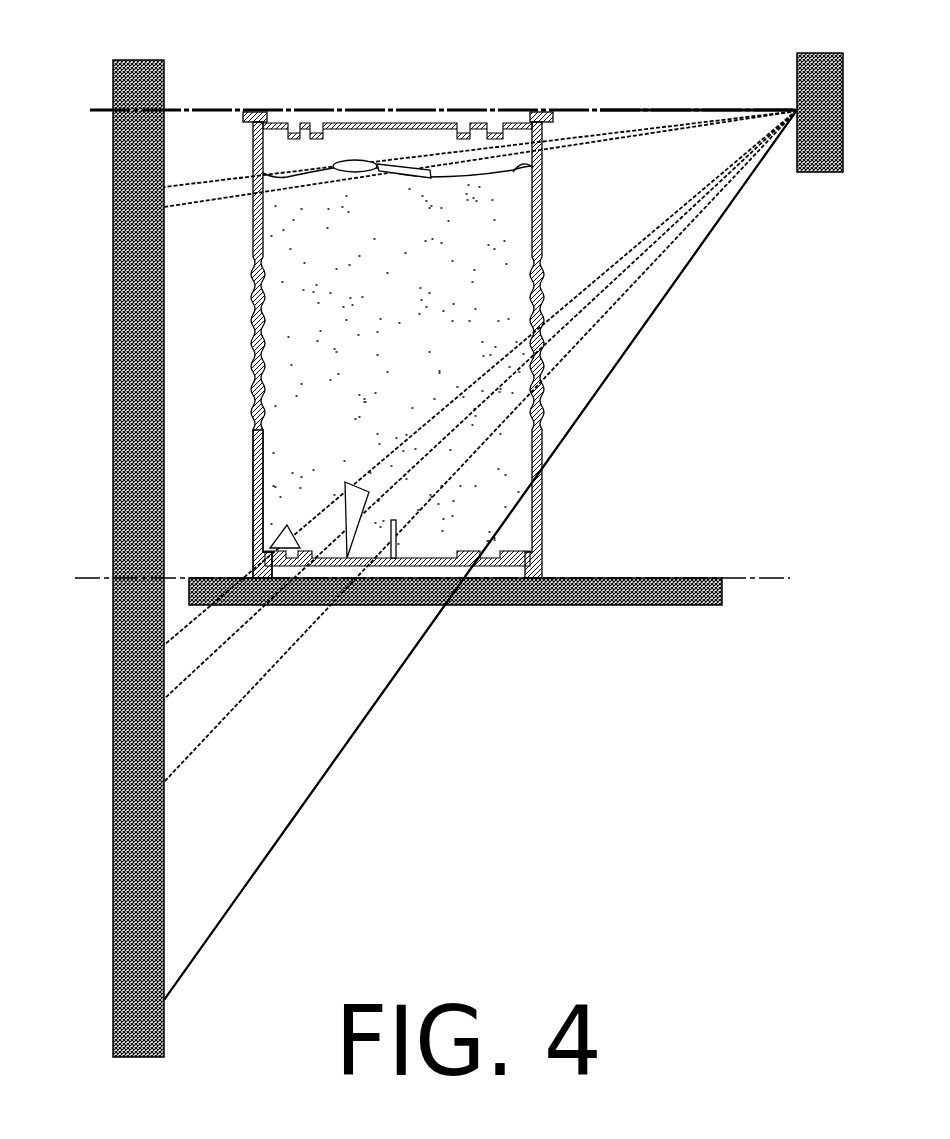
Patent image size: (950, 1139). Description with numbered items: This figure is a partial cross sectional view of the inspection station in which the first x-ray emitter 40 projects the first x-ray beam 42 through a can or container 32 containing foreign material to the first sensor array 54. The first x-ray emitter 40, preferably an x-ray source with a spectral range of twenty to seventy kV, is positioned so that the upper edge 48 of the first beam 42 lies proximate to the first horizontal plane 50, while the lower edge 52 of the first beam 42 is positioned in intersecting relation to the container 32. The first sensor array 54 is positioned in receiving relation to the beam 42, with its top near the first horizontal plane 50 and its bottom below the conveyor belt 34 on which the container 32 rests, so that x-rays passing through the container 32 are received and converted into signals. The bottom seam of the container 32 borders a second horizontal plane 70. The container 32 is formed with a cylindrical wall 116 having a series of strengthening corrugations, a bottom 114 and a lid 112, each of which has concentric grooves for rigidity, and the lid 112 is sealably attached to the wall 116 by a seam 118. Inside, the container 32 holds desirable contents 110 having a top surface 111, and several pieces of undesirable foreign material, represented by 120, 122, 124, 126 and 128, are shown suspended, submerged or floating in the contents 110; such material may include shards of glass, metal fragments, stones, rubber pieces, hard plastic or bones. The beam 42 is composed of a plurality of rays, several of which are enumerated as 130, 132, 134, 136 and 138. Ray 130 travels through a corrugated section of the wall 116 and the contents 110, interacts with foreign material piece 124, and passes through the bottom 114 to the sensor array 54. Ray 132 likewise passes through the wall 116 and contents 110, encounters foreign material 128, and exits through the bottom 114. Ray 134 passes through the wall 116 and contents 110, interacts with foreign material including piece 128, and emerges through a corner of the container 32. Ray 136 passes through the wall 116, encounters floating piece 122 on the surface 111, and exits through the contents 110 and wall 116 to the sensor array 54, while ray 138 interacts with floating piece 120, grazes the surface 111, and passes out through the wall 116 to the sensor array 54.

The can or container 32 is at (237, 265).
The conveyor belt 34 is at (703, 607).
The first x-ray emitter 40 is at (828, 174).
The first x-ray beam 42 is at (235, 832).
The upper edge of the first beam 48 is at (717, 108).
The first horizontal plane 50 is at (92, 106).
The lower edge of the first beam 52 is at (592, 403).
The first sensor array 54 is at (113, 778).
The second horizontal plane 70 is at (752, 577).
The desirable contents 110 is at (290, 362).
The top surface of the contents 111 is at (545, 167).
The lid 112 is at (320, 127).
The bottom 114 is at (500, 566).
The cylindrical wall 116 is at (257, 468).
The seam 118 is at (247, 127).
The floating foreign material piece 120 is at (349, 163).
The floating foreign material piece 122 is at (399, 165).
The foreign material piece 124 is at (398, 553).
The foreign material piece 126 is at (283, 537).
The foreign material piece 128 is at (349, 553).
The ray 130 is at (587, 333).
The ray 132 is at (593, 300).
The ray 134 is at (622, 258).
The ray 136 is at (635, 140).
The ray 138 is at (570, 138).